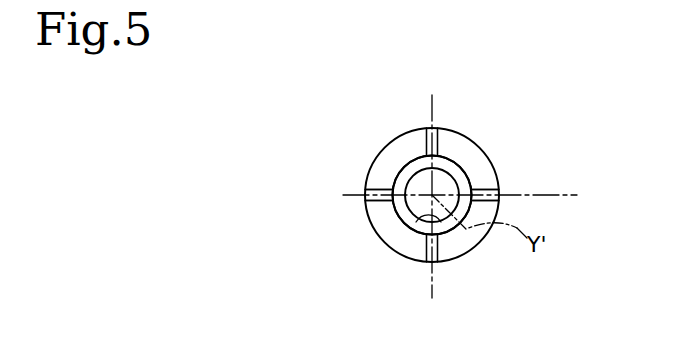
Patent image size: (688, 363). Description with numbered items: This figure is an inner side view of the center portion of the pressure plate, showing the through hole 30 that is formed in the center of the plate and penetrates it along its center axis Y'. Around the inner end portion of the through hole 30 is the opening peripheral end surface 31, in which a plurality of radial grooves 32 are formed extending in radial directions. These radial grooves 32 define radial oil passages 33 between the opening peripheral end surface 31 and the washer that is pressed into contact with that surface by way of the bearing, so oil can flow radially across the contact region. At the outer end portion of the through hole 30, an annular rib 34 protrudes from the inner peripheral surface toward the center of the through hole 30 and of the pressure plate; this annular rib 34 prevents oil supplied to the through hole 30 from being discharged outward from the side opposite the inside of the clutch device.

The through hole 30 is at (460, 169).
The opening peripheral end surface 31 is at (395, 148).
The radial grooves 32 is at (435, 143).
The radial oil passages 33 is at (440, 252).
The annular rib 34 is at (425, 218).